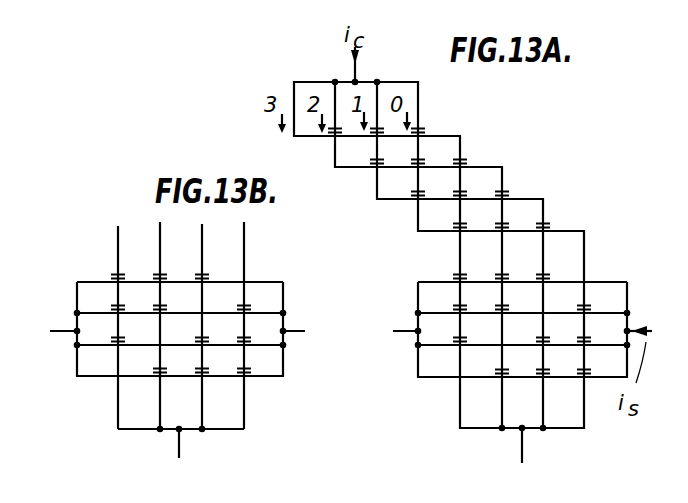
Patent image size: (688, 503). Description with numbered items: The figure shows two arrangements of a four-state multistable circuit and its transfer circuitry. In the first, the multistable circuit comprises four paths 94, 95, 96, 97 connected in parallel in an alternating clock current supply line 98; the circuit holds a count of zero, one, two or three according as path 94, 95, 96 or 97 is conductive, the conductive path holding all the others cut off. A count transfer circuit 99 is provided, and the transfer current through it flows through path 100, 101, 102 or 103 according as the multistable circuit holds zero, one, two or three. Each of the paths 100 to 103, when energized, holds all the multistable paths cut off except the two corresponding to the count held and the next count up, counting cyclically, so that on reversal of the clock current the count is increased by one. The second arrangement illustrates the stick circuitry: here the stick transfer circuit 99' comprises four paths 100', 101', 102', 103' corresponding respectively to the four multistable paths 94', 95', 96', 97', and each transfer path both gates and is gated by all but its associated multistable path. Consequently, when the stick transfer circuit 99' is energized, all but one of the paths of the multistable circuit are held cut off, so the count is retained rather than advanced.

In FIG. 13A, the path 94 is at (382, 109).
In FIG. 13A, the path 95 is at (421, 147).
In FIG. 13A, the path 96 is at (468, 177).
In FIG. 13A, the path 97 is at (507, 208).
In FIG. 13A, the alternating clock current supply line 98 is at (358, 70).
In FIG. 13A, the count transfer circuit 99 is at (500, 322).
In FIG. 13A, the path 100 is at (520, 256).
In FIG. 13A, the path 101 is at (499, 295).
In FIG. 13A, the path 102 is at (501, 343).
In FIG. 13A, the path 103 is at (497, 372).
In FIG. 13B, the path 94' is at (266, 325).
In FIG. 13B, the path 95' is at (219, 326).
In FIG. 13B, the path 96' is at (142, 325).
In FIG. 13B, the path 97' is at (92, 327).
In FIG. 13B, the stick transfer circuit 99' is at (197, 328).
In FIG. 13B, the path 100' is at (207, 264).
In FIG. 13B, the path 101' is at (206, 299).
In FIG. 13B, the path 102' is at (206, 357).
In FIG. 13B, the path 103' is at (200, 378).